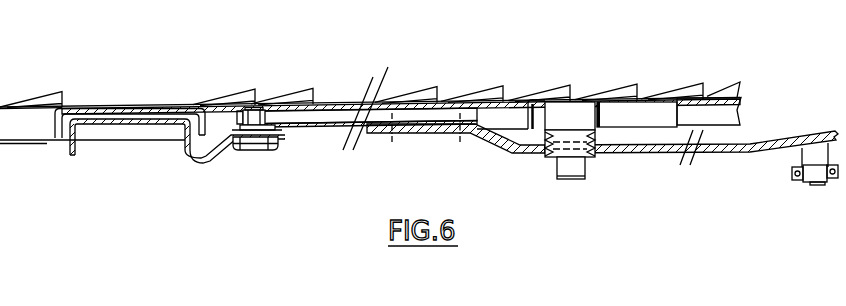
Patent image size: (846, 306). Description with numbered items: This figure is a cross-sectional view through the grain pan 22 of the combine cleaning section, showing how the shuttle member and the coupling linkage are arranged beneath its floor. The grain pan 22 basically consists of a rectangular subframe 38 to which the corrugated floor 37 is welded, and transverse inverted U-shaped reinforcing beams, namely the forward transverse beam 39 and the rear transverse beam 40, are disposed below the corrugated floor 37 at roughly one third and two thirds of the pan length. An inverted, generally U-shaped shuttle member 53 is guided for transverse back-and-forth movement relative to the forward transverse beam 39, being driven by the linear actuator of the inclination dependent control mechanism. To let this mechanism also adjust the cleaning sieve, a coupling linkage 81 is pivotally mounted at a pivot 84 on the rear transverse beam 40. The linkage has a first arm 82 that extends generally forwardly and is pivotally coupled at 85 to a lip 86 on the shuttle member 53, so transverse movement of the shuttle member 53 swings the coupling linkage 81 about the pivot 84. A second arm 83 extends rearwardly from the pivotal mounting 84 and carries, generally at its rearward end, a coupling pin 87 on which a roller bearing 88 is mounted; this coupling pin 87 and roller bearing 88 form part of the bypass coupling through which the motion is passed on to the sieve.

The grain pan 22 is at (299, 86).
The corrugated floor 37 is at (521, 101).
The rectangular subframe 38 is at (737, 110).
The rear transverse beam 40 is at (676, 121).
The forward transverse beam 39 is at (50, 140).
The shuttle member 53 is at (138, 126).
The pivotal coupling 85 is at (236, 140).
The lip 86 is at (280, 158).
The first arm 82 is at (325, 128).
The coupling linkage 81 is at (512, 149).
The pivot 84 is at (588, 164).
The second arm 83 is at (657, 153).
The roller bearing 88 is at (792, 173).
The coupling pin 87 is at (815, 185).